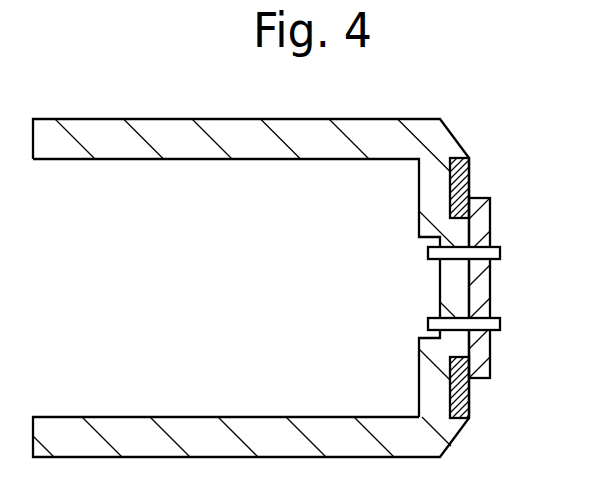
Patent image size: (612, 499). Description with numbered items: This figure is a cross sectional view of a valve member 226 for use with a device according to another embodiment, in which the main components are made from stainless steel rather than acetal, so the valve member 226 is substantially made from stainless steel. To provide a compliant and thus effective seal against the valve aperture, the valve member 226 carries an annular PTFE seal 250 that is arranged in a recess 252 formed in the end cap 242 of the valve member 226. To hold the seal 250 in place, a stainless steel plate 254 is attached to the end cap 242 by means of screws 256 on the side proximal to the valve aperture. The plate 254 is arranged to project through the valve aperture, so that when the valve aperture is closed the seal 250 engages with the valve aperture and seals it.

The valve member 226 is at (170, 424).
The end cap 242 is at (430, 162).
The annular PTFE seal 250 is at (467, 397).
The recess 252 is at (465, 185).
The stainless steel plate 254 is at (482, 289).
The screws 256 is at (429, 254).